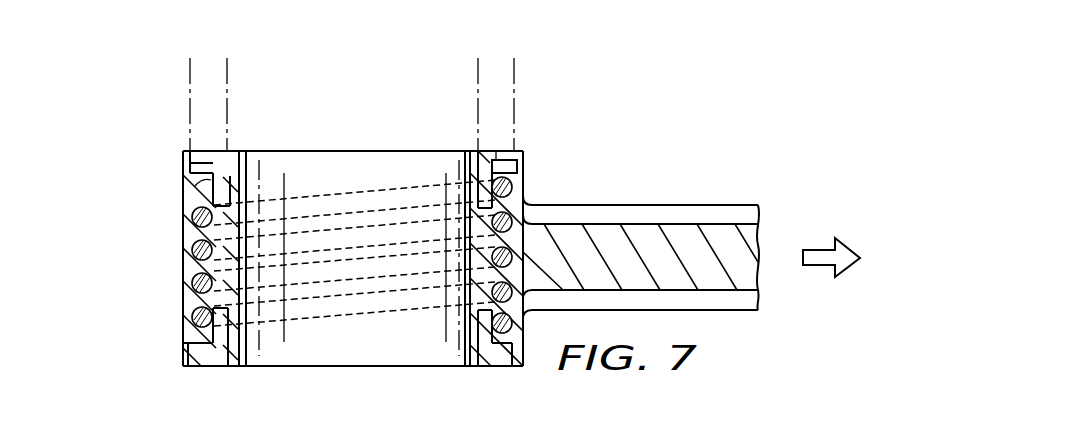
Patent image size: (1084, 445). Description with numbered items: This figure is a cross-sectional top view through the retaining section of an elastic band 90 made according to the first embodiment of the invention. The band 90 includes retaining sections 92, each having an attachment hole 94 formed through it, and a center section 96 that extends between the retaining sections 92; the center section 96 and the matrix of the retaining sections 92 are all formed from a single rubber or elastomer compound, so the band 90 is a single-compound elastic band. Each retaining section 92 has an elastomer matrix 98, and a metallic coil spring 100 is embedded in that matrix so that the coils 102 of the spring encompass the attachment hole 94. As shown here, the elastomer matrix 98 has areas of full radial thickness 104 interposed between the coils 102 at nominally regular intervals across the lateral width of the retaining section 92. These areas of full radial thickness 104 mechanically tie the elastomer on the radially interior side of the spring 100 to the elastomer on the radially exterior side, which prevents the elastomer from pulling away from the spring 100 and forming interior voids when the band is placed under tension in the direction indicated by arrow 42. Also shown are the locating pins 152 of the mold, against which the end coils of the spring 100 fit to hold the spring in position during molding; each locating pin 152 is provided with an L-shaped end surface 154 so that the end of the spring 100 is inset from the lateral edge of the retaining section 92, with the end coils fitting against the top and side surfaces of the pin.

The arrow 42 is at (848, 247).
The elastic band 90 is at (531, 71).
The retaining section 92 is at (200, 233).
The attachment hole 94 is at (348, 153).
The center section 96 is at (652, 190).
The elastomer matrix 98 is at (200, 328).
The metallic coil spring 100 is at (400, 325).
The coils 102 is at (200, 277).
The areas of full radial thickness 104 is at (512, 272).
The locating pins 152 is at (228, 72).
The L-shaped end surface 154 is at (195, 186).